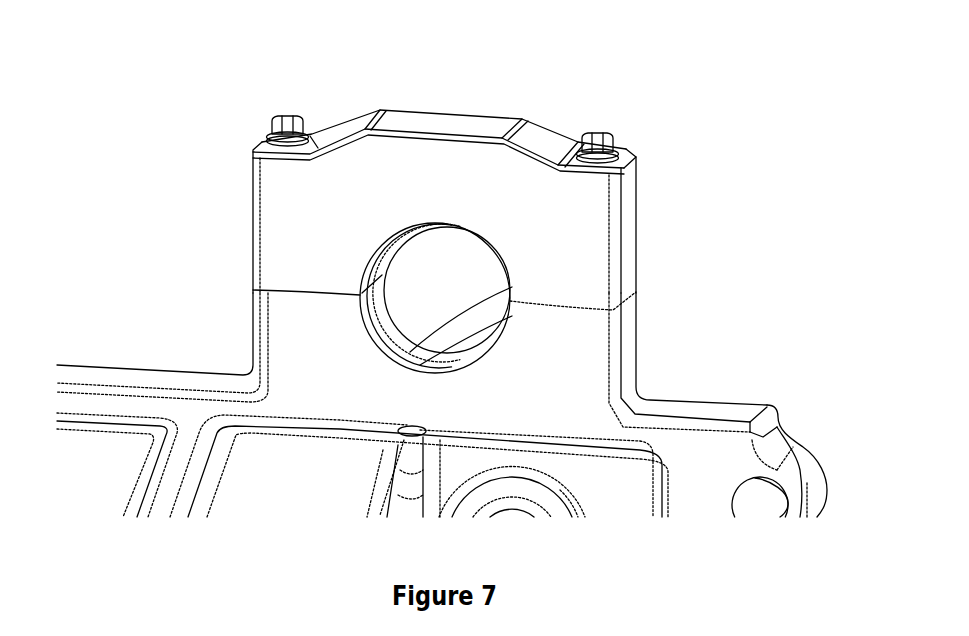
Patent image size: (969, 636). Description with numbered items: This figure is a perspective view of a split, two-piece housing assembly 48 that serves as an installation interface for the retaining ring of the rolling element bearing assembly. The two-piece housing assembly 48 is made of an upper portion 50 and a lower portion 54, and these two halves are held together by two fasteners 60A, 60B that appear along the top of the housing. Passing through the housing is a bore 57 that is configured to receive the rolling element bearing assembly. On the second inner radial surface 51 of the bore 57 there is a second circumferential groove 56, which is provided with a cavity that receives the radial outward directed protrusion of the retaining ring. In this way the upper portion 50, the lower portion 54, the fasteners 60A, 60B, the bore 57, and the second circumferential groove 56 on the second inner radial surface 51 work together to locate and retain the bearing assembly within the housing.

The two-piece housing assembly 48 is at (434, 106).
The fastener 60A is at (284, 124).
The fastener 60B is at (600, 140).
The upper portion 50 is at (625, 198).
The second inner radial surface 51 is at (512, 316).
The lower portion 54 is at (628, 362).
The second circumferential groove 56 is at (512, 287).
The bore 57 is at (373, 338).